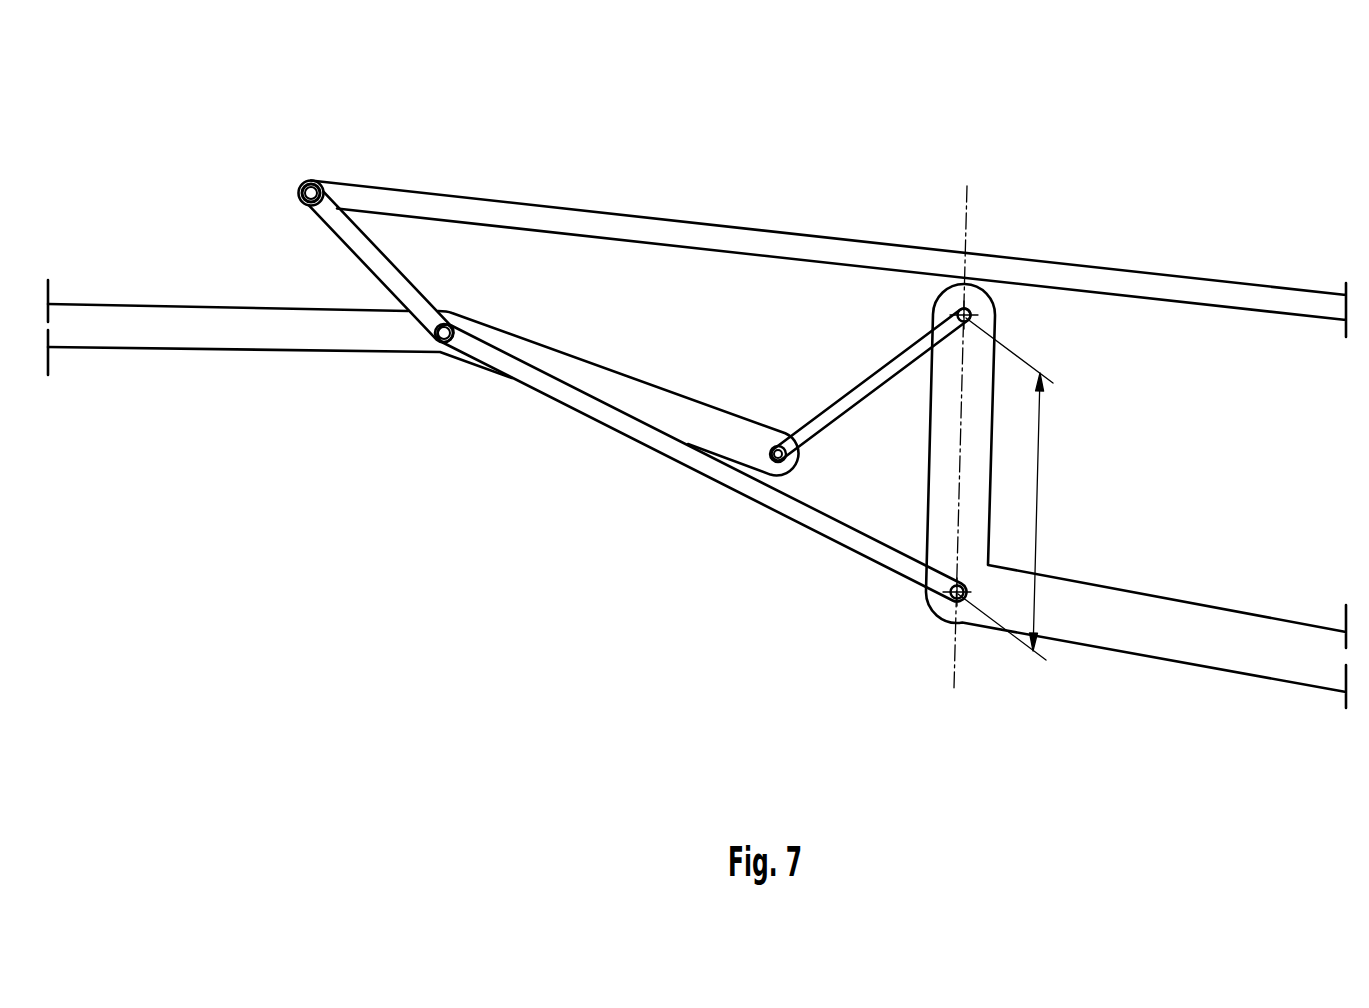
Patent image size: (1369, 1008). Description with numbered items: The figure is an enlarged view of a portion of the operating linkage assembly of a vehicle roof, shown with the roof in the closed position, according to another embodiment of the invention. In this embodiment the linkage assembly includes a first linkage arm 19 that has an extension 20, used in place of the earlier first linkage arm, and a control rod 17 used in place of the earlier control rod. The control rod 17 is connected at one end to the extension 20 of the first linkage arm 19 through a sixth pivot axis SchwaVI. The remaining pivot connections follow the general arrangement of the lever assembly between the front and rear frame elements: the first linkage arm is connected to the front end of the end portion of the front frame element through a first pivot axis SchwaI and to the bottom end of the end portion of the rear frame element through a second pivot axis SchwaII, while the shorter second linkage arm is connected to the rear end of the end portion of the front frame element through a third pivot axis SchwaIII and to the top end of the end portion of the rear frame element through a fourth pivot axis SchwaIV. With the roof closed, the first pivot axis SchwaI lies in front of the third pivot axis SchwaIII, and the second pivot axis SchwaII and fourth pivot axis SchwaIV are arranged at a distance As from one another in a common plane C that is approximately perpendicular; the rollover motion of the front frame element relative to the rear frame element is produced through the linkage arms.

The control rod 17 is at (768, 211).
The first linkage arm 19 is at (767, 531).
The extension 20 is at (393, 243).
The sixth pivot axis SchwaVI is at (324, 162).
The first pivot axis SchwaI is at (427, 362).
The second pivot axis SchwaII is at (926, 642).
The third pivot axis SchwaIII is at (787, 410).
The fourth pivot axis SchwaIV is at (998, 268).
The distance As is at (1022, 489).
The common plane C- C is at (961, 438).